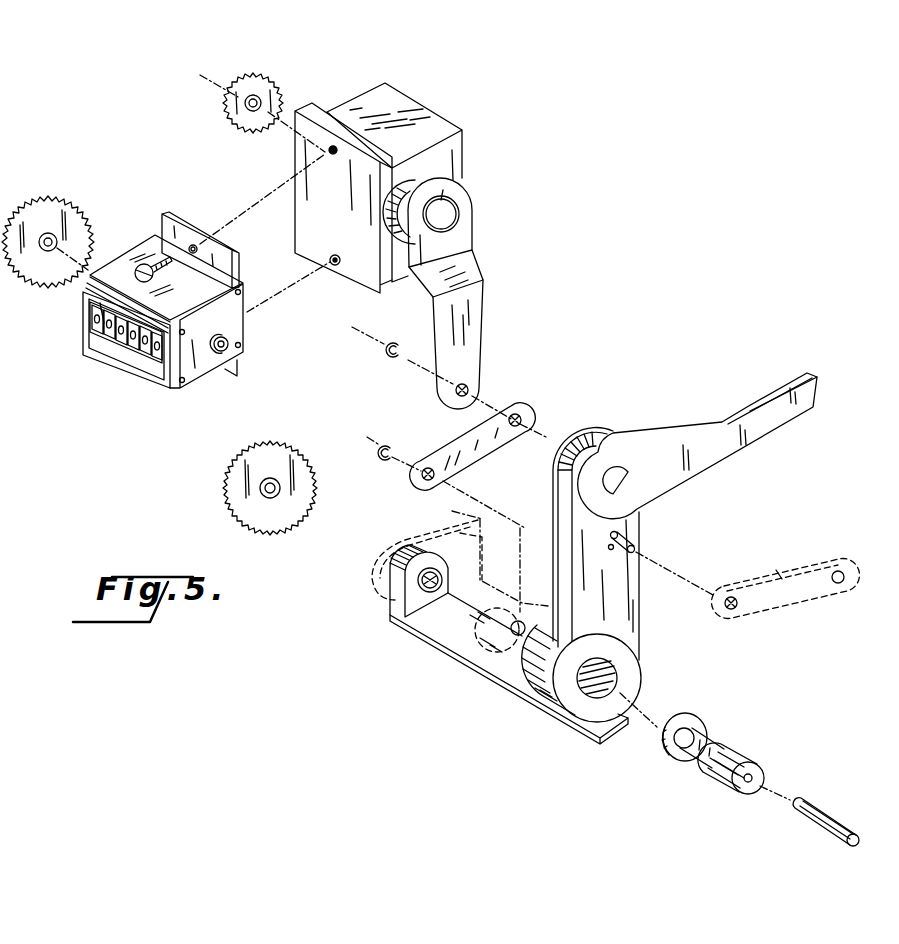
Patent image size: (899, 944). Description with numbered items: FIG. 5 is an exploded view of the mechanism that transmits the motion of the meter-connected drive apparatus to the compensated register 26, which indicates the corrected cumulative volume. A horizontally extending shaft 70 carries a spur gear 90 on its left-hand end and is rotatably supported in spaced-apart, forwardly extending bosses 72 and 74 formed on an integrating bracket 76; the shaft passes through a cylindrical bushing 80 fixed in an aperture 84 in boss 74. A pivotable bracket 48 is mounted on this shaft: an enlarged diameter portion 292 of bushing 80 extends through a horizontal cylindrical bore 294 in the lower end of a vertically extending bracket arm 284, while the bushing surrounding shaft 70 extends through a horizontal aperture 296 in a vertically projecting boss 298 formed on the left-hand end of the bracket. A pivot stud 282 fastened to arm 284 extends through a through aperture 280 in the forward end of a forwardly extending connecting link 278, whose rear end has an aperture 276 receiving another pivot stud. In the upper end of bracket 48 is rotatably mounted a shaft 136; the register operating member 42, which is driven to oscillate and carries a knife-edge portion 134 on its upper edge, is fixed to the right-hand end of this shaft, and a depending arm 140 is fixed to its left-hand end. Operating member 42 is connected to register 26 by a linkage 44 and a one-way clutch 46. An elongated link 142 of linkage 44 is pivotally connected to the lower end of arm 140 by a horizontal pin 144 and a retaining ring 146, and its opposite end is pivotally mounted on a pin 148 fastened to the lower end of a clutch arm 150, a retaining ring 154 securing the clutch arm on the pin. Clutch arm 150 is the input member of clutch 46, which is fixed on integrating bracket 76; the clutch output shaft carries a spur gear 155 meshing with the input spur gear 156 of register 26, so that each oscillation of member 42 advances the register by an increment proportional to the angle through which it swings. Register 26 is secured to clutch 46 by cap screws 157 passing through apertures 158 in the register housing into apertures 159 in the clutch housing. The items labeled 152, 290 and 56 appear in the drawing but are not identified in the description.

The compensated register 26 is at (107, 355).
The spur gear 155 is at (248, 132).
The input spur gear 156 is at (43, 267).
The cap screws 157 is at (158, 274).
The apertures 158 is at (195, 246).
The apertures 159 is at (333, 155).
The one-way clutch 46 is at (452, 163).
The clutch arm 150 is at (477, 360).
The retaining ring 154 is at (398, 340).
The pin 148 is at (469, 385).
The screw 152 is at (522, 411).
The elongated link 142 is at (459, 440).
The horizontal pin 144 is at (427, 486).
The retaining ring 146 is at (379, 458).
The linkage 44 is at (410, 428).
The spur gear 90 is at (297, 443).
The integrating bracket 76 is at (494, 524).
The aperture 84 is at (514, 565).
The boss 72 is at (373, 552).
The boss 74 is at (493, 633).
The horizontal aperture 296 is at (440, 573).
The vertically projecting boss 298 is at (418, 603).
The pivotable bracket 48 is at (542, 677).
The horizontal cylindrical bore 294 is at (620, 675).
The depending arm 140 is at (550, 528).
The bracket arm 284 is at (630, 617).
The hole 290 is at (611, 551).
The pivot stud 282 is at (636, 550).
The register operating member 42 is at (722, 452).
The shaft 136 is at (628, 473).
The knife-edge portion 134 is at (763, 405).
The plate 56 is at (792, 607).
The connecting link 278 is at (782, 572).
The through aperture 280 is at (740, 600).
The aperture 276 is at (845, 573).
The enlarged diameter portion 292 is at (738, 757).
The cylindrical bushing 80 is at (712, 782).
The shaft 70 is at (813, 803).